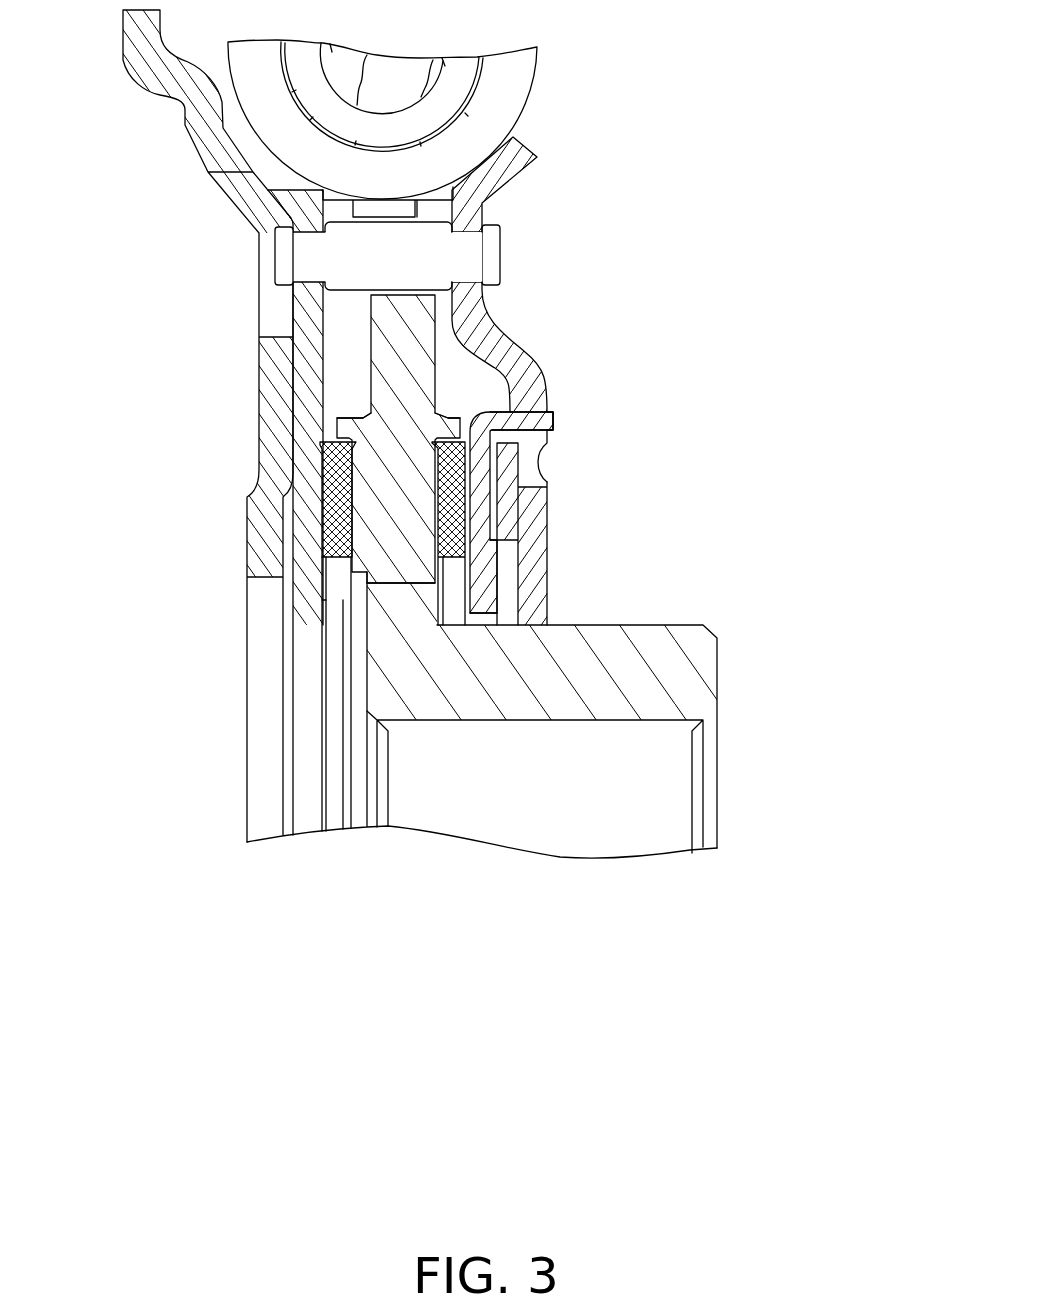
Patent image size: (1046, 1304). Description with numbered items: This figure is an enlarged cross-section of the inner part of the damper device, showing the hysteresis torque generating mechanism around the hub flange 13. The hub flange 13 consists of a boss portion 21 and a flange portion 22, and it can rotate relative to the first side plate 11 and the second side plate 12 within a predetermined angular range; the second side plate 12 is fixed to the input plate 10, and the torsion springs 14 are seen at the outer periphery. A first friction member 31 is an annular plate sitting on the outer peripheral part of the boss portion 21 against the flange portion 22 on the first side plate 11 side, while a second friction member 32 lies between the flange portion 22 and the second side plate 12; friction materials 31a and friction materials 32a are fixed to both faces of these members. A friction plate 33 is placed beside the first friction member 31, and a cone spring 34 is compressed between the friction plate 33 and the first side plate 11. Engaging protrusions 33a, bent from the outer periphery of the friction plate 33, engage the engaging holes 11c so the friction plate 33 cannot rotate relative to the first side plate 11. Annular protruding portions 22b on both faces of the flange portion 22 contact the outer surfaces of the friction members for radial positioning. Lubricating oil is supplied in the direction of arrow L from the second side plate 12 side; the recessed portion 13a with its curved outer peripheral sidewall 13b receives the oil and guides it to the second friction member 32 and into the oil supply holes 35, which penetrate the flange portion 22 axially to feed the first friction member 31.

The input plate 10 is at (267, 487).
The first side plate 11 is at (533, 566).
The engaging holes 11c is at (544, 467).
The second side plate 12 is at (300, 552).
The hub flange 13 is at (730, 625).
The recessed portion 13a is at (362, 767).
The outer peripheral sidewall 13b is at (340, 601).
The torsion springs 14 is at (520, 98).
The boss portion 21 is at (705, 673).
The flange portion 22 is at (417, 317).
The annular protruding portions 22b is at (343, 417).
The first friction member 31 is at (485, 400).
The friction materials 31a is at (483, 614).
The second friction member 32 is at (309, 450).
The friction materials 32a is at (320, 567).
The friction plate 33 is at (549, 398).
The engaging protrusions 33a is at (554, 421).
The cone spring 34 is at (466, 552).
The oil supply holes 35 is at (406, 600).
The arrow L is at (319, 623).